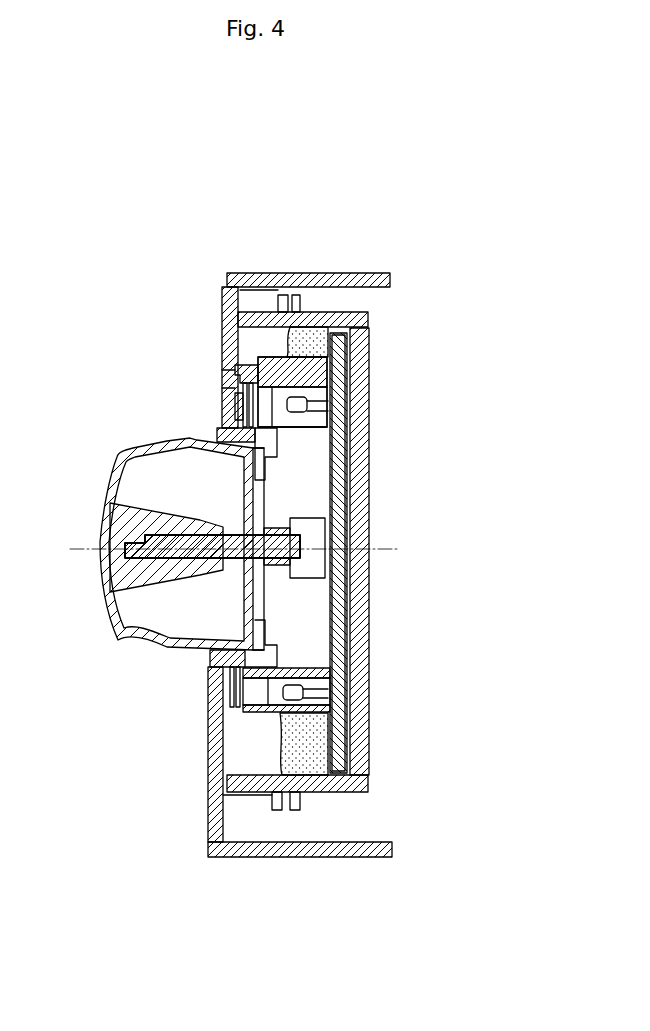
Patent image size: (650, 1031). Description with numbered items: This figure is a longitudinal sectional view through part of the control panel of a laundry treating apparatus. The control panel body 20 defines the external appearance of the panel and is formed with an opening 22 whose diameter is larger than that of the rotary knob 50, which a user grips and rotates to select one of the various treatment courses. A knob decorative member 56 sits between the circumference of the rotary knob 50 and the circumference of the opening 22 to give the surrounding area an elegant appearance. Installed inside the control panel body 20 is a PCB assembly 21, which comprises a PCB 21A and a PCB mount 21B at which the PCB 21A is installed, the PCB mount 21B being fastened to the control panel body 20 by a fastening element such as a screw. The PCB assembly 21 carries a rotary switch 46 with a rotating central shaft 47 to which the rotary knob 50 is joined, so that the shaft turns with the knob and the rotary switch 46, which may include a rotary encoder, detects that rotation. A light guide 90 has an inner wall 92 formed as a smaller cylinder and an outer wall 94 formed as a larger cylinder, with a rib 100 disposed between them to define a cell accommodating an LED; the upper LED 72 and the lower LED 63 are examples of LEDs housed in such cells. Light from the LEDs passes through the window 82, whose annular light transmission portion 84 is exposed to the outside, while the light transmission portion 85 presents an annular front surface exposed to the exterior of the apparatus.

The control panel body 20 is at (289, 272).
The PCB assembly 21 is at (385, 783).
The PCB 21A is at (340, 771).
The PCB mount 21B is at (354, 741).
The opening 22 is at (217, 388).
The rotary switch 46 is at (317, 537).
The rotating central shaft 47 is at (140, 566).
The rotary knob 50 is at (115, 500).
The knob decorative member 56 is at (218, 423).
The second LED 63 is at (282, 707).
The second LED 72 is at (322, 388).
The window 82 is at (218, 383).
The annular light transmission portion 84 is at (218, 402).
The light transmission portion 85 is at (218, 397).
The light guide 90 is at (303, 355).
The inner wall 92 is at (298, 403).
The outer wall 94 is at (335, 356).
The rib 100 is at (278, 407).